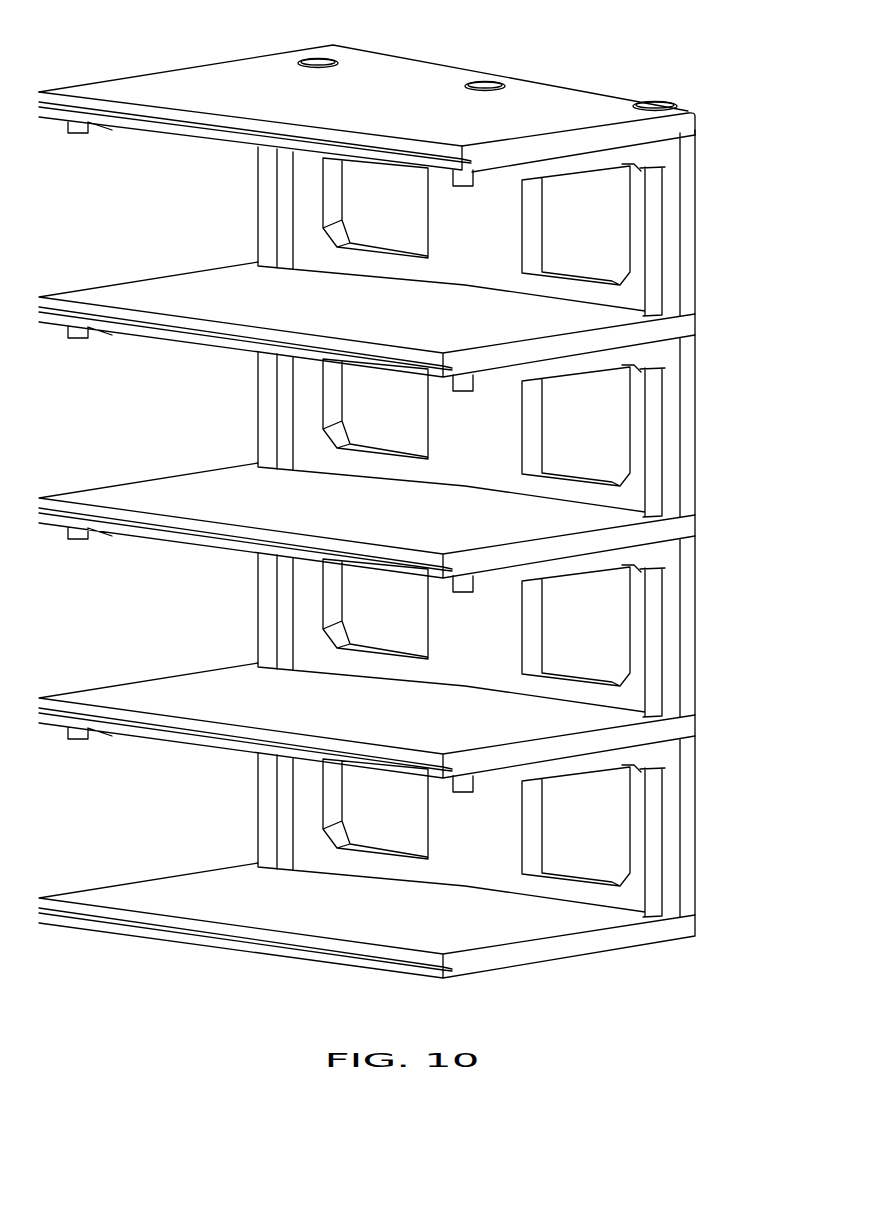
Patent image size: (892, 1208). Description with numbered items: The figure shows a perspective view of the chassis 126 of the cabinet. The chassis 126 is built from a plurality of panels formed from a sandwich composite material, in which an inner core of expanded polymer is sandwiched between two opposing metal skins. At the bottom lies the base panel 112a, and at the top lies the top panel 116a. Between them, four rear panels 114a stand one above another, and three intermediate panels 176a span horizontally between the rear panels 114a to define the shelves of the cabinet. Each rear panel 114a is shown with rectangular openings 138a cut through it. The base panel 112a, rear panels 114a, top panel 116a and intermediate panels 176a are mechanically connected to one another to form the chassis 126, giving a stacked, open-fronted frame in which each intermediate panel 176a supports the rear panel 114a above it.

The top panel 116a is at (400, 88).
The chassis 126 is at (422, 497).
The openings 138a is at (352, 210).
The rear panel 114a is at (452, 236).
The intermediate panel 176a is at (337, 311).
The base panel 112a is at (323, 916).